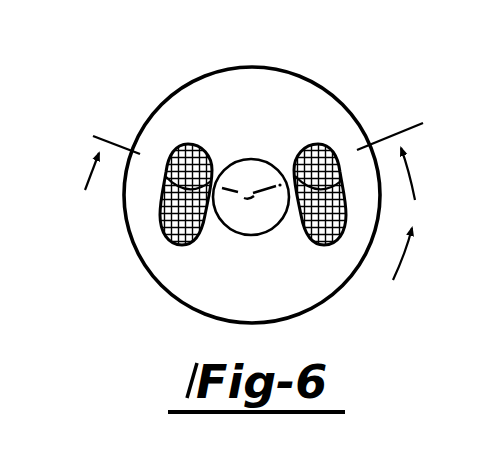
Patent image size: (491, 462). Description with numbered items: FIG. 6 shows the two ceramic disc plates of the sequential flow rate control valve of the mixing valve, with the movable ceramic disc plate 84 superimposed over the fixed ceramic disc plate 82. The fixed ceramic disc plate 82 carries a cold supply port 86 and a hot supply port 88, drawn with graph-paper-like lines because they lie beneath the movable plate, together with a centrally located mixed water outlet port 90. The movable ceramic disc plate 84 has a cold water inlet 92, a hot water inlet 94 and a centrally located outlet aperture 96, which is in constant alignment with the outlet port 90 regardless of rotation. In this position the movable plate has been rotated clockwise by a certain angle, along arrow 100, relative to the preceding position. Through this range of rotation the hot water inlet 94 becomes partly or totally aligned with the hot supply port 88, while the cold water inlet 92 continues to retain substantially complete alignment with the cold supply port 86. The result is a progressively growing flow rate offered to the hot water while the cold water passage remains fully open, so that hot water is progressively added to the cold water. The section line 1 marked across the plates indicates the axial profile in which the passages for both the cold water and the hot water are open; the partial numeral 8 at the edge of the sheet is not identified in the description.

The section line I—I 1 is at (254, 147).
The scale 8 is at (484, 158).
The fixed ceramic disc plate 82 is at (328, 121).
The movable ceramic disc plate 84 is at (172, 122).
The cold supply port 86 is at (333, 247).
The hot supply port 88 is at (165, 250).
The mixed water outlet port 90 is at (252, 216).
The cold water inlet 92 is at (316, 148).
The hot water inlet 94 is at (195, 146).
The outlet aperture 96 is at (248, 244).
The arrow 100 is at (430, 214).